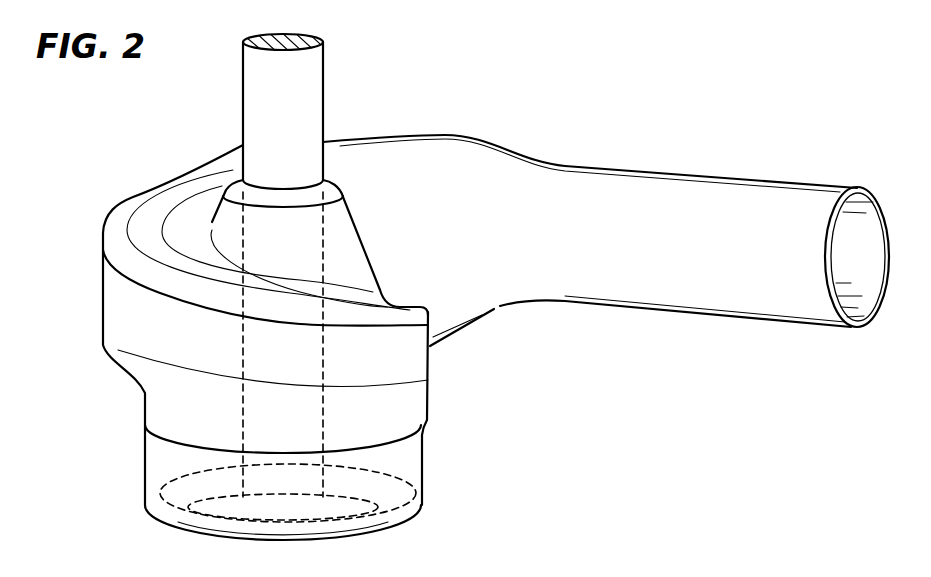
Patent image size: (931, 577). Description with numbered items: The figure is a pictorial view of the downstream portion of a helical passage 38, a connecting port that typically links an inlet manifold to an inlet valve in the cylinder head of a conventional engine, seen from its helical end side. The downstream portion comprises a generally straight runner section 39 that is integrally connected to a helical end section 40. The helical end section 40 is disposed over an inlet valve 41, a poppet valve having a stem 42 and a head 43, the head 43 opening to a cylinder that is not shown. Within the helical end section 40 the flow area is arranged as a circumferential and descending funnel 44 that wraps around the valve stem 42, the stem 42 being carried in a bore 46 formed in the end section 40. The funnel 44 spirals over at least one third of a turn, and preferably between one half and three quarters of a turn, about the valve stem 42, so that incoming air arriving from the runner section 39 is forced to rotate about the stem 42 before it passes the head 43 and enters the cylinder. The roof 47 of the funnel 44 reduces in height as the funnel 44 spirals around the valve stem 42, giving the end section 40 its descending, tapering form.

The helical passage 38 is at (538, 89).
The straight runner section 39 is at (663, 165).
The helical end section 40 is at (103, 307).
The inlet valve 41 is at (322, 118).
The stem 42 is at (323, 80).
The head 43 is at (420, 462).
The funnel 44 is at (428, 370).
The bore 46 is at (270, 192).
The roof 47 is at (148, 227).